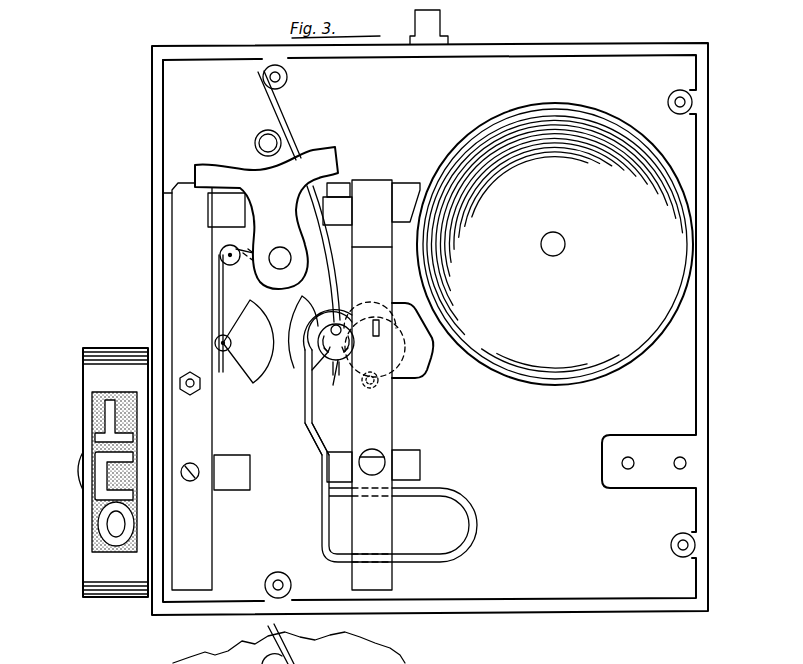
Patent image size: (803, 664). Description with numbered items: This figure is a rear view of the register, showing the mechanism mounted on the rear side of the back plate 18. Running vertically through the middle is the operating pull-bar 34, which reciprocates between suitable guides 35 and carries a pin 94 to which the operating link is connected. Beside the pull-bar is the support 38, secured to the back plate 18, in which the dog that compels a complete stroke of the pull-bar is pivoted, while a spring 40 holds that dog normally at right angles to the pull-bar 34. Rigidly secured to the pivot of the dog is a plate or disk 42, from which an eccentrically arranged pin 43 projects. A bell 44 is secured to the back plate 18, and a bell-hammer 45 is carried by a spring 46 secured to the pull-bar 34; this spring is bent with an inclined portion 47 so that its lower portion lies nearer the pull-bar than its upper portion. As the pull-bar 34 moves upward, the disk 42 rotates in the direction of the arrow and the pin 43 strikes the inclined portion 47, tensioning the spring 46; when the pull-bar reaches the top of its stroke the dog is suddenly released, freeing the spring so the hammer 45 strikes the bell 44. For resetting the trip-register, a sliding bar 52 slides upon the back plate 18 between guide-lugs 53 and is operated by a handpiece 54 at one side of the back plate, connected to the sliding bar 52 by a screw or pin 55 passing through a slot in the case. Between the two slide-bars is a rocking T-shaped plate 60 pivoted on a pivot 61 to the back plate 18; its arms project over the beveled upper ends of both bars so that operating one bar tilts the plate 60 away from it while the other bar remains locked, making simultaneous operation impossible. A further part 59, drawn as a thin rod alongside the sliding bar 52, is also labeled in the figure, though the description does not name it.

The back plate 18 is at (430, 312).
The operating pull-bar 34 is at (385, 422).
The guides 35 is at (371, 332).
The support 38 is at (300, 360).
The spring 40 is at (336, 272).
The plate or disk 42 is at (326, 386).
The pin 43 is at (336, 349).
The bell 44 is at (546, 385).
The bell-hammer 45 is at (395, 352).
The spring 46 is at (304, 408).
The inclined portion 47 is at (318, 447).
The sliding bar 52 is at (187, 386).
The guide-lugs 53 is at (229, 341).
The handpiece 54 is at (115, 472).
The screw or pin 55 is at (80, 471).
The rod 59 is at (224, 305).
The rocking T-shaped plate 60 is at (266, 218).
The pivot 61 is at (286, 243).
The pin 94 is at (384, 462).